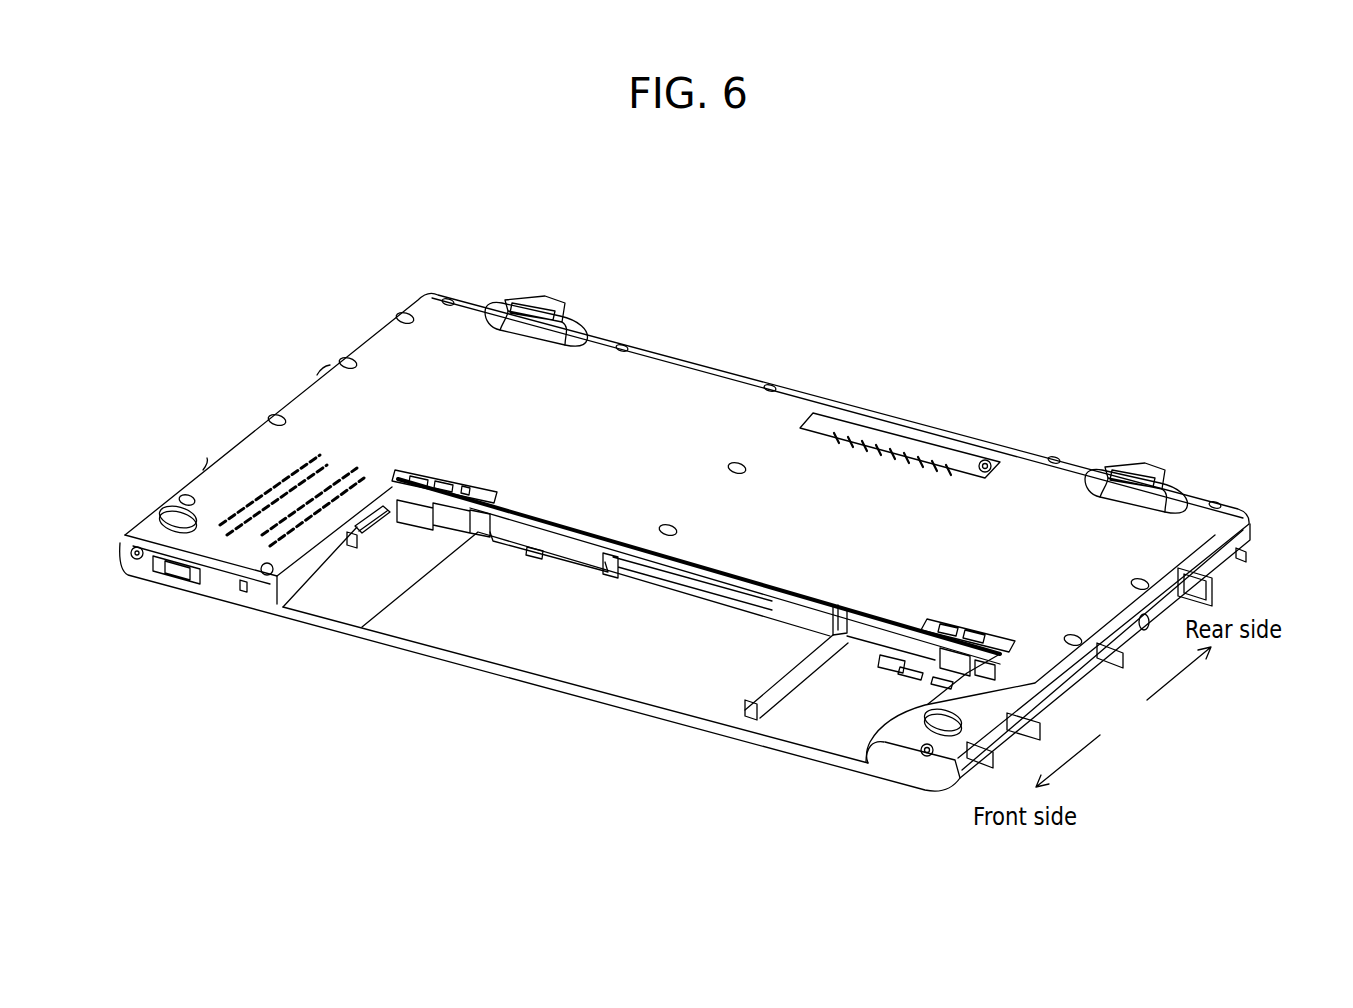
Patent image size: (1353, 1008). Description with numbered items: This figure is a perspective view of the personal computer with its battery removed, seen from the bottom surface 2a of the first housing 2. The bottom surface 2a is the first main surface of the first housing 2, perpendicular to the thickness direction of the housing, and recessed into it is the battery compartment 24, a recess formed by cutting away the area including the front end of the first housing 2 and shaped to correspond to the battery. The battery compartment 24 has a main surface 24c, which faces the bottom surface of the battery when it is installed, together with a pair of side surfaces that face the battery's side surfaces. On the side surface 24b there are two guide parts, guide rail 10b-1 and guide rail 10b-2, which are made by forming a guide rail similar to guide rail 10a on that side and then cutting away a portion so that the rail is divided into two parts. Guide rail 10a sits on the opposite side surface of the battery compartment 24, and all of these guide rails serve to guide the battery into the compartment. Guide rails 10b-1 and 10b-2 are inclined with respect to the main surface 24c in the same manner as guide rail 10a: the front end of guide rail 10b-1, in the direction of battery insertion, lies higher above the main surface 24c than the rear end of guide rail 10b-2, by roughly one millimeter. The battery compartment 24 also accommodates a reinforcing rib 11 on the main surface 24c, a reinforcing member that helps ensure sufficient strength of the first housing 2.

The first housing 2 is at (688, 362).
The bottom surface 2a is at (653, 388).
The guide rail 10b-1 is at (313, 557).
The guide rail 10b-2 is at (372, 507).
The side surface 24b is at (390, 490).
The battery compartment 24 is at (560, 617).
The reinforcing rib 11 is at (772, 693).
The main surface 24c is at (820, 717).
The guide rail 10a is at (866, 750).